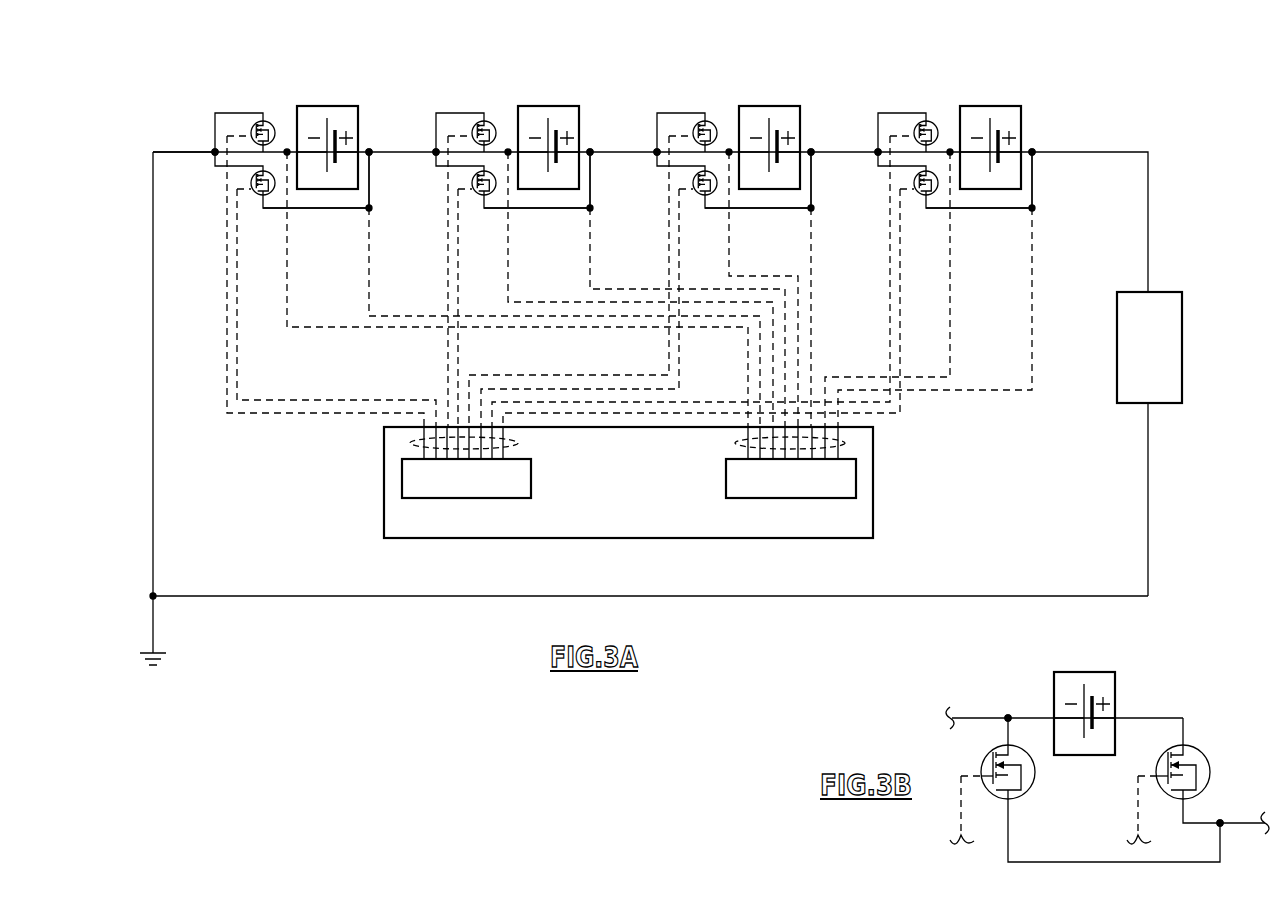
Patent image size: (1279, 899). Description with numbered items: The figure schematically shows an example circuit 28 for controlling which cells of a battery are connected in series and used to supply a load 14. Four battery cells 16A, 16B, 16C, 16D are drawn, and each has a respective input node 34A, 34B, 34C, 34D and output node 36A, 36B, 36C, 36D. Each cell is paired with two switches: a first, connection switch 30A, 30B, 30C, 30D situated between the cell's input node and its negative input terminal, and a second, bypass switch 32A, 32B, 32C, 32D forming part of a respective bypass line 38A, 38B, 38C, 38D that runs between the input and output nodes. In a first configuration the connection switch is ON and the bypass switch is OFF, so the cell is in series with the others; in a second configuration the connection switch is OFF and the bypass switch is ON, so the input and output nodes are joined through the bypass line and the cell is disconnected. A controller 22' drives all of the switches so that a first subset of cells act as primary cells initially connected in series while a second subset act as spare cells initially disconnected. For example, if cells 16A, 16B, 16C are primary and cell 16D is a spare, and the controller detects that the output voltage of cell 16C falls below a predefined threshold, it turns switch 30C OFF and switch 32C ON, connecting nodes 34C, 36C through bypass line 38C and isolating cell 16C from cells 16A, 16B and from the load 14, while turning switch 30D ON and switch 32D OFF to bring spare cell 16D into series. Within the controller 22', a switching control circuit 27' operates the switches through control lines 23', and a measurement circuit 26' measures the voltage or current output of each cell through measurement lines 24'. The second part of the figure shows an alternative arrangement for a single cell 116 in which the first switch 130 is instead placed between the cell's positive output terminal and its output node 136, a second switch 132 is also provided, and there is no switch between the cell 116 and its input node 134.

In FIG. 3A, the circuit 28 is at (180, 78).
In FIG. 3A, the load 14 is at (1182, 345).
In FIG. 3A, the battery cell 16A is at (322, 106).
In FIG. 3A, the battery cell 16B is at (543, 106).
In FIG. 3A, the battery cell 16C is at (764, 106).
In FIG. 3A, the battery cell 16D is at (985, 106).
In FIG. 3A, the connection switch 30A is at (272, 124).
In FIG. 3A, the connection switch 30B is at (493, 124).
In FIG. 3A, the connection switch 30C is at (714, 124).
In FIG. 3A, the connection switch 30D is at (935, 124).
In FIG. 3A, the bypass switch 32A is at (258, 196).
In FIG. 3A, the bypass switch 32B is at (479, 196).
In FIG. 3A, the bypass switch 32C is at (700, 196).
In FIG. 3A, the bypass switch 32D is at (921, 196).
In FIG. 3A, the input node 34A is at (211, 146).
In FIG. 3A, the input node 34B is at (431, 162).
In FIG. 3A, the input node 34C is at (654, 146).
In FIG. 3A, the input node 34D is at (873, 162).
In FIG. 3A, the output node 36A is at (369, 148).
In FIG. 3A, the output node 36B is at (596, 162).
In FIG. 3A, the output node 36C is at (811, 148).
In FIG. 3A, the output node 36D is at (1038, 162).
In FIG. 3A, the bypass line 38A is at (307, 210).
In FIG. 3A, the bypass line 38B is at (528, 210).
In FIG. 3A, the bypass line 38C is at (749, 210).
In FIG. 3A, the bypass line 38D is at (969, 210).
In FIG. 3A, the controller 22' is at (602, 482).
In FIG. 3A, the measurement lines 24' is at (425, 451).
In FIG. 3A, the control lines 23' is at (831, 451).
In FIG. 3A, the measurement circuit 26' is at (494, 478).
In FIG. 3A, the switching control circuit 27' is at (764, 478).
In FIG. 3B, the battery cell 116 is at (1085, 672).
In FIG. 3B, the first switch 130 is at (1200, 752).
In FIG. 3B, the second switch 132 is at (1030, 785).
In FIG. 3B, the input node 134 is at (1007, 716).
In FIG. 3B, the output node 136 is at (1220, 812).